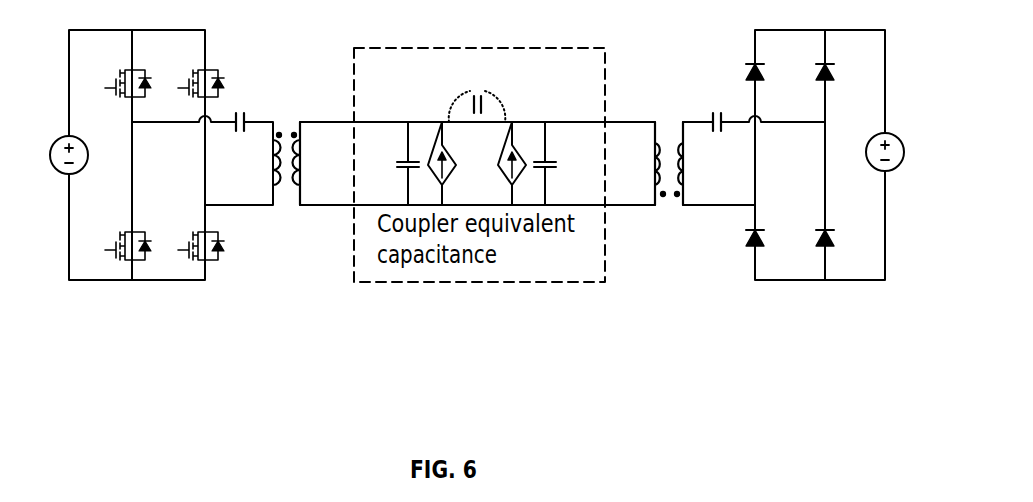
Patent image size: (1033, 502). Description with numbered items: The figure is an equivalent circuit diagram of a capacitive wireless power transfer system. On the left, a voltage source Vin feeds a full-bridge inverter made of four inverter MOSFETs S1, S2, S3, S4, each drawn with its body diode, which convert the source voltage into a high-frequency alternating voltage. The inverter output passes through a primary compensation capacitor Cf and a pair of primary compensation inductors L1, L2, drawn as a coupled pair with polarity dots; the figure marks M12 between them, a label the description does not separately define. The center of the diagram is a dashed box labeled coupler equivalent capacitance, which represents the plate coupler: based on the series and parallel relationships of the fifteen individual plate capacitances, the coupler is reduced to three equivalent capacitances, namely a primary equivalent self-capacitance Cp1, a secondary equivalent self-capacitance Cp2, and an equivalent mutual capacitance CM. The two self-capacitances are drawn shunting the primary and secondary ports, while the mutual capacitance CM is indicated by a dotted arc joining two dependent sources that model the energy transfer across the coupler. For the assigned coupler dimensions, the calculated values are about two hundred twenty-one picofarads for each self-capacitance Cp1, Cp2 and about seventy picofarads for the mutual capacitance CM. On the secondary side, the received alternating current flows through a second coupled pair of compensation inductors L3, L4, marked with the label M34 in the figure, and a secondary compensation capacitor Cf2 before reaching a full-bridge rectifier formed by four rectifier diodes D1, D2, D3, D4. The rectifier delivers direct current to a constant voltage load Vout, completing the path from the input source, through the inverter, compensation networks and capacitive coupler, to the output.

The voltage source Vin is at (57, 137).
The inverter MOSFET S1 is at (120, 71).
The inverter MOSFET S2 is at (192, 71).
The inverter MOSFET S3 is at (120, 232).
The inverter MOSFET S4 is at (192, 232).
The compensation capacitor Cf is at (247, 95).
The compensation inductor L1 is at (262, 160).
The compensation inductor L2 is at (316, 163).
The mutual inductance between L1 and L2 M12 is at (304, 224).
The equivalent self-capacitance Cp1 is at (389, 163).
The equivalent self-capacitance Cp2 is at (568, 163).
The equivalent mutual capacitance CM is at (477, 91).
The compensation inductor L3 is at (645, 163).
The compensation inductor L4 is at (699, 163).
The mutual inductance between L3 and L4 M34 is at (684, 226).
The compensation capacitor Cf2 is at (711, 102).
The rectifier diode D1 is at (776, 69).
The rectifier diode D2 is at (846, 69).
The rectifier diode D3 is at (776, 225).
The rectifier diode D4 is at (846, 225).
The constant voltage load Vout is at (903, 134).